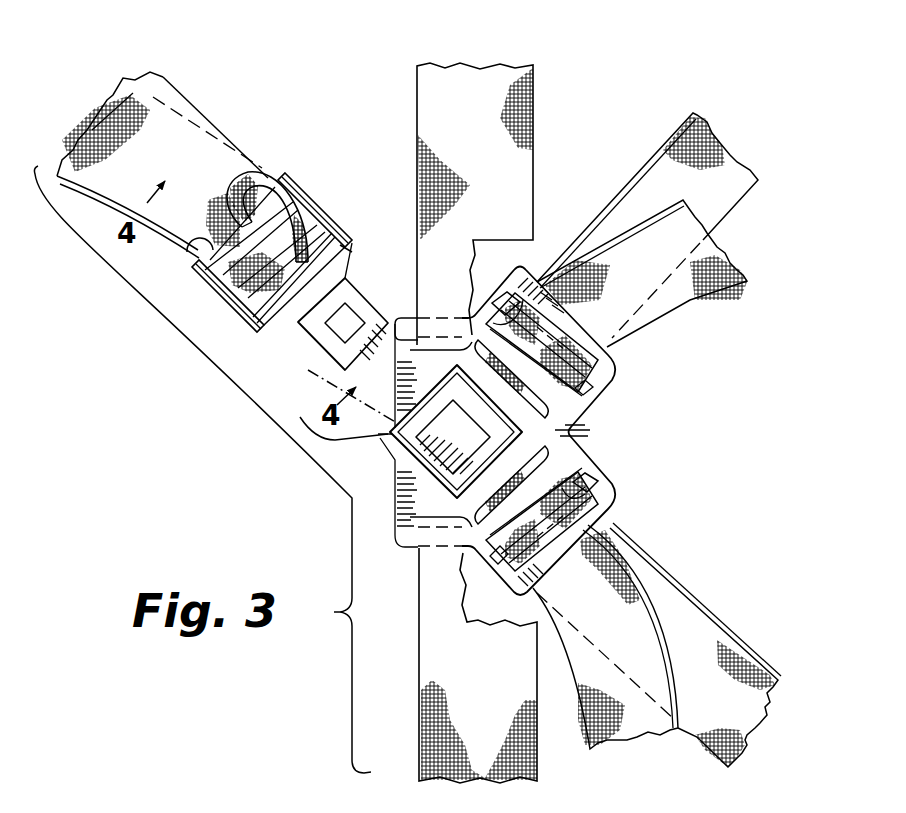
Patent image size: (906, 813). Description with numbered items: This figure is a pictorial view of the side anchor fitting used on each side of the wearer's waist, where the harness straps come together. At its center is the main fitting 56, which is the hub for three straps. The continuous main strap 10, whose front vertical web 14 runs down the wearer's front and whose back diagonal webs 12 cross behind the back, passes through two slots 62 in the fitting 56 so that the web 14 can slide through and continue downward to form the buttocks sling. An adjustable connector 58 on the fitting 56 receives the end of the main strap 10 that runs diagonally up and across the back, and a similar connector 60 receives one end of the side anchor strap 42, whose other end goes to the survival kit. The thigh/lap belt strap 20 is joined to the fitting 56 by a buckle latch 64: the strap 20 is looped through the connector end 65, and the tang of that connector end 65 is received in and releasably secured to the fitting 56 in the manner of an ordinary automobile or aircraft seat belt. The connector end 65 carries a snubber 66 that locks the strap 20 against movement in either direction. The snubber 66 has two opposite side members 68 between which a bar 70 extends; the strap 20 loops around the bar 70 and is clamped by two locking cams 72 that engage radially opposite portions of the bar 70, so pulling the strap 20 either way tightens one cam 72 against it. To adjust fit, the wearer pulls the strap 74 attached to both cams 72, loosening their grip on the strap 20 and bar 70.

The main strap 10 is at (655, 224).
The back diagonal web 12 is at (722, 172).
The front vertical web 14 is at (521, 173).
The thigh/lap belt strap 20 is at (178, 92).
The side anchor strap 42 is at (698, 627).
The main fitting 56 is at (376, 472).
The adjustable connector 58 is at (613, 378).
The connector 60 is at (607, 500).
The slot 62 is at (406, 340).
The buckle latch 64 is at (333, 370).
The connector end 65 is at (317, 328).
The snubber 66 is at (326, 205).
The side member 68 is at (210, 290).
The bar 70 is at (240, 297).
The locking cam 72 is at (207, 245).
The strap 74 is at (263, 173).